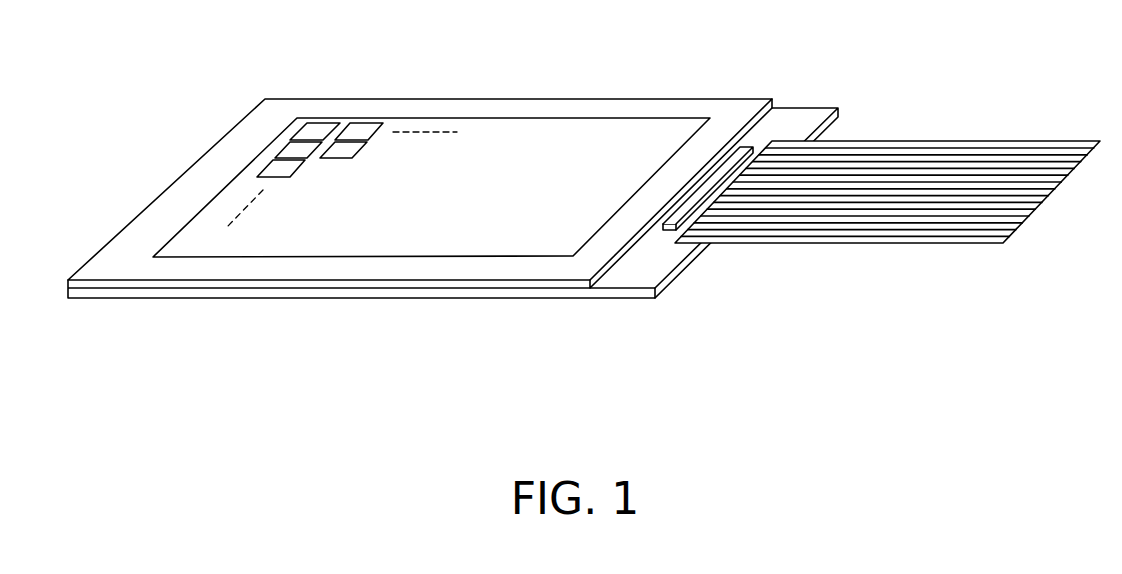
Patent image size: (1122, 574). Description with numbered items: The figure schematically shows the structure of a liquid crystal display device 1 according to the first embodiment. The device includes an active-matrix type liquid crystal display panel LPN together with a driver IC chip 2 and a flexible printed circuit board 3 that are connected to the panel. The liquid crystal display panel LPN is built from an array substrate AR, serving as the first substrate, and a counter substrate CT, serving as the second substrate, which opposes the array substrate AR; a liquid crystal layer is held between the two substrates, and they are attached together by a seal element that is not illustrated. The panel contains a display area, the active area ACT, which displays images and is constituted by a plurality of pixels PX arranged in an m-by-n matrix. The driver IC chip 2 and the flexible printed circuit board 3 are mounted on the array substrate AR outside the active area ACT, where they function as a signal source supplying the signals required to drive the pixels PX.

The liquid crystal display device 1 is at (584, 222).
The driver IC chip 2 is at (740, 148).
The flexible printed circuit board 3 is at (1036, 141).
The pixel PX is at (324, 122).
The active area ACT is at (363, 262).
The counter substrate CT is at (457, 283).
The array substrate AR is at (515, 293).
The liquid crystal display panel LPN is at (453, 231).